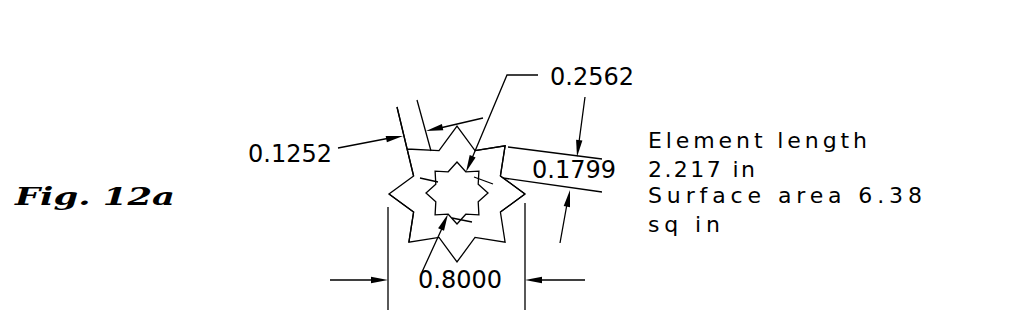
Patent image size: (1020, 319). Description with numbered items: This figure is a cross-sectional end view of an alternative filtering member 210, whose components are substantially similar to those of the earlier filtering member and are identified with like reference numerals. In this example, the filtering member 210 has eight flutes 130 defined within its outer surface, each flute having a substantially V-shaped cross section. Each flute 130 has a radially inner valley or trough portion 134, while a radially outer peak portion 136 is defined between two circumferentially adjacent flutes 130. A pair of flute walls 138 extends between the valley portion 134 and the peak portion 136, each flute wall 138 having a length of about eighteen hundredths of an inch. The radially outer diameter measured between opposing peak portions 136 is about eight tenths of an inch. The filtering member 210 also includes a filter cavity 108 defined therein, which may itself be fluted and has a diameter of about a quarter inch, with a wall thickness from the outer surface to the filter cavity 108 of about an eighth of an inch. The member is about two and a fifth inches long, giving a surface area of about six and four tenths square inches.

The filtering member 210 is at (290, 55).
The filter cavity 108 is at (388, 196).
The flutes 130 is at (385, 169).
The valley portion 134 is at (514, 215).
The peak portion 136 is at (506, 145).
The flute walls 138 is at (410, 225).